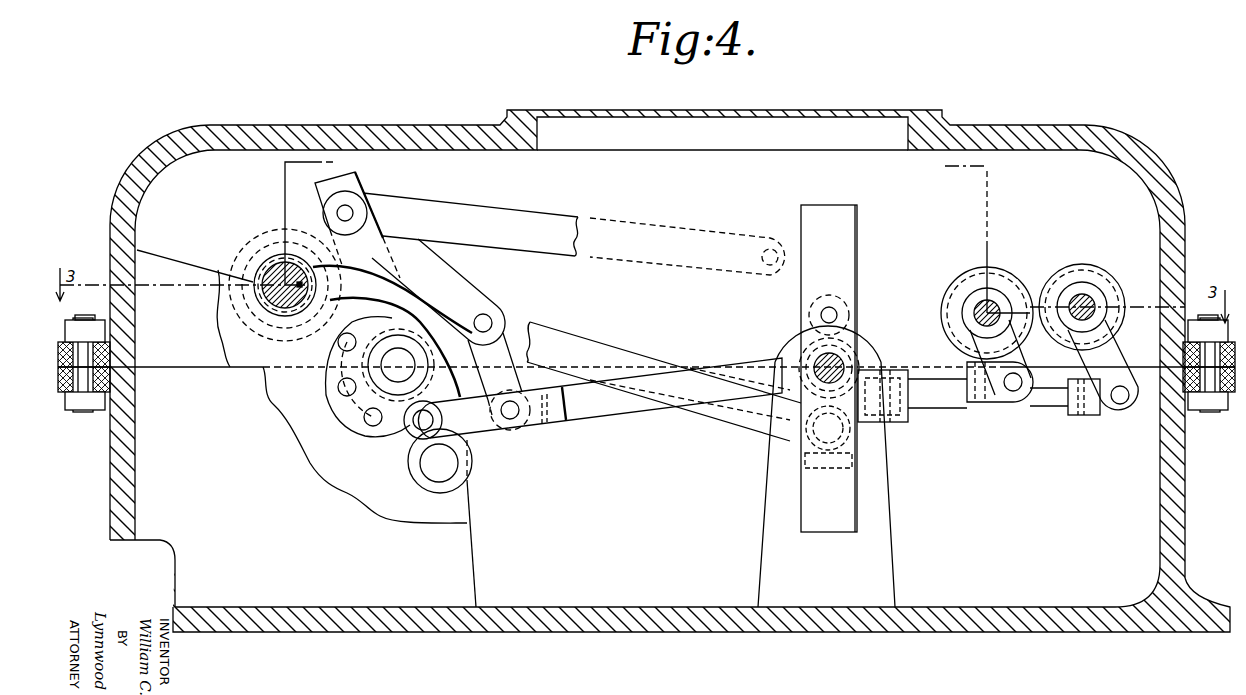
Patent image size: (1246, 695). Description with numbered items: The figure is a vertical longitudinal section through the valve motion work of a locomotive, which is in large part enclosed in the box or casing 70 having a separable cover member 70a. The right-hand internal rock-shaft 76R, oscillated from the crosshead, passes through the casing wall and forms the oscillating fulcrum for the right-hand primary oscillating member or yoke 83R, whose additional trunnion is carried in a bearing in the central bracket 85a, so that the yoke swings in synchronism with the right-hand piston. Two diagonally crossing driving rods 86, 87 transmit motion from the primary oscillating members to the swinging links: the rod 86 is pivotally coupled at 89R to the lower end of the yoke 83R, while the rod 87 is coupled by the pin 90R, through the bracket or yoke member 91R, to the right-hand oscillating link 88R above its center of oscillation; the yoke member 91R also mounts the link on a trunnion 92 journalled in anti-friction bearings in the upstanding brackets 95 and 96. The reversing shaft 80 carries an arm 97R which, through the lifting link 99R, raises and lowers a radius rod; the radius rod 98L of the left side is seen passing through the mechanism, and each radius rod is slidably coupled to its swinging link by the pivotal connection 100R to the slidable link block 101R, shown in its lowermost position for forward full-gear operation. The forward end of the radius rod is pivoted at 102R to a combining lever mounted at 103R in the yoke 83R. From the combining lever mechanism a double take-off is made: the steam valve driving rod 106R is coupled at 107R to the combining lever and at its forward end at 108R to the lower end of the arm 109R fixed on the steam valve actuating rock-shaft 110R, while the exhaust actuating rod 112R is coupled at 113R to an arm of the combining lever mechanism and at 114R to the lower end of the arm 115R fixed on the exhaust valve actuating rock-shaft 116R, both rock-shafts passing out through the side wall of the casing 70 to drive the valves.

The casing 70 is at (117, 456).
The cover member 70a is at (117, 223).
The right-hand internal rock-shaft 76R is at (812, 355).
The reversing shaft 80 is at (273, 303).
The right-hand primary oscillating member 83R is at (836, 525).
The central bracket 85a is at (877, 577).
The driving rod 86 is at (722, 410).
The driving rod 87 is at (512, 218).
The right-hand oscillating link 88R is at (395, 440).
The pivot 89R is at (850, 440).
The pin 90R is at (338, 216).
The bracket or yoke member 91R is at (363, 190).
The trunnion 92 is at (395, 366).
The upstanding bracket 95 is at (455, 573).
The upstanding bracket 96 is at (455, 513).
The arm 97R is at (457, 291).
The left-hand radius rod 98L is at (615, 412).
The lifting link 99R is at (503, 350).
The pivotal connection 100R is at (478, 427).
The link block 101R is at (418, 440).
The pivotal connection 102R is at (855, 352).
The pivot 103R is at (838, 310).
The steam valve driving rod 106R is at (1055, 400).
The pivotal coupling 107R is at (868, 410).
The pivotal coupling 108R is at (1122, 405).
The arm 109R is at (1100, 413).
The valve actuating rock-shaft 110R is at (1088, 298).
The actuating rod 112R is at (945, 393).
The pivotal coupling 113R is at (868, 378).
The pivotal coupling 114R is at (1013, 395).
The arm 115R is at (1010, 357).
The exhaust valve actuating rock-shaft 116R is at (982, 305).